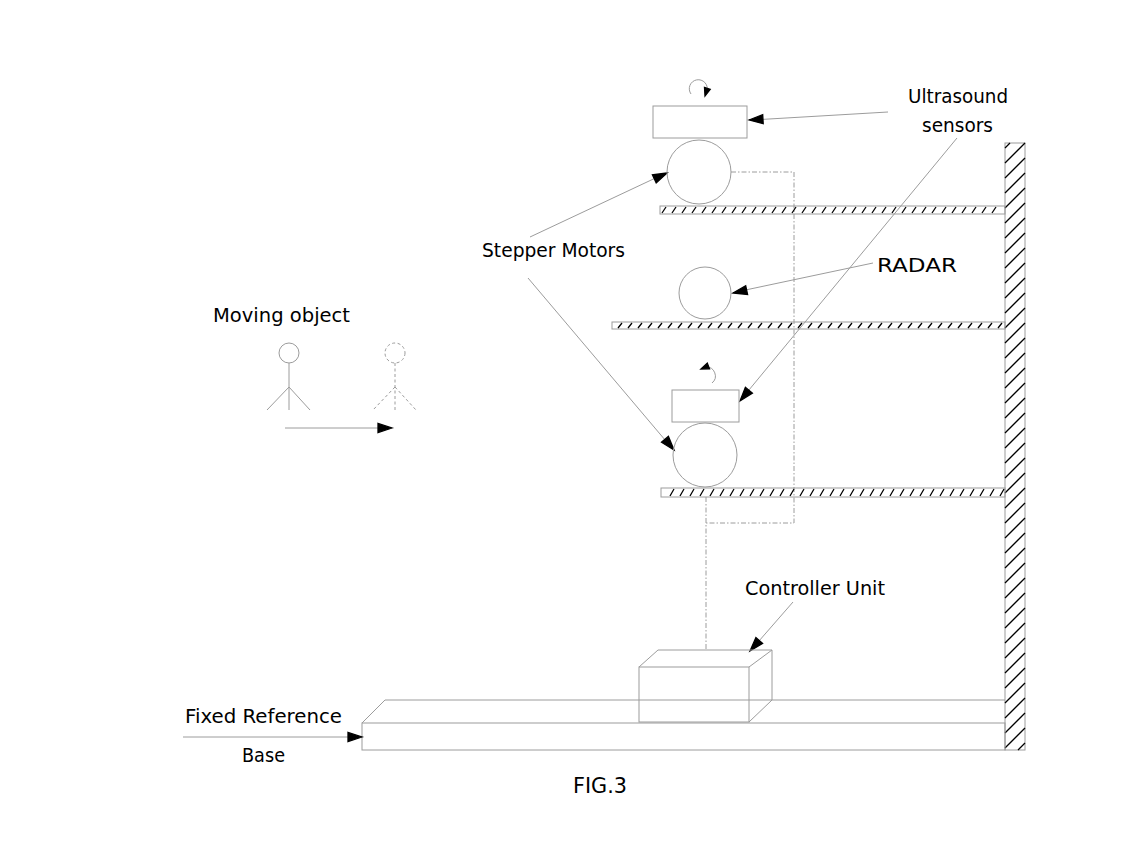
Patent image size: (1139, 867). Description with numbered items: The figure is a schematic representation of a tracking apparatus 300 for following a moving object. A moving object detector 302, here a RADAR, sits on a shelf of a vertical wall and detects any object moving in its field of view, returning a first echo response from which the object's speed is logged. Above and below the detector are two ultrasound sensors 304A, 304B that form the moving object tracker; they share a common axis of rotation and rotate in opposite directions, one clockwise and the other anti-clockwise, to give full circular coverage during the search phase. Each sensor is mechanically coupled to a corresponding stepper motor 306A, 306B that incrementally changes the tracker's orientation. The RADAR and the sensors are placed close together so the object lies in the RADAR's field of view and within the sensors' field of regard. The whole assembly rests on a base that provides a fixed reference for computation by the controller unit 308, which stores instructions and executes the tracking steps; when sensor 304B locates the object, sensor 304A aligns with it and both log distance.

The tracking apparatus 300 is at (1037, 88).
The moving object detector 302 is at (686, 303).
The ultrasound sensor 304A is at (674, 132).
The ultrasound sensor 304B is at (679, 416).
The stepper motor 306A is at (673, 182).
The stepper motor 306B is at (679, 465).
The controller unit 308 is at (675, 702).